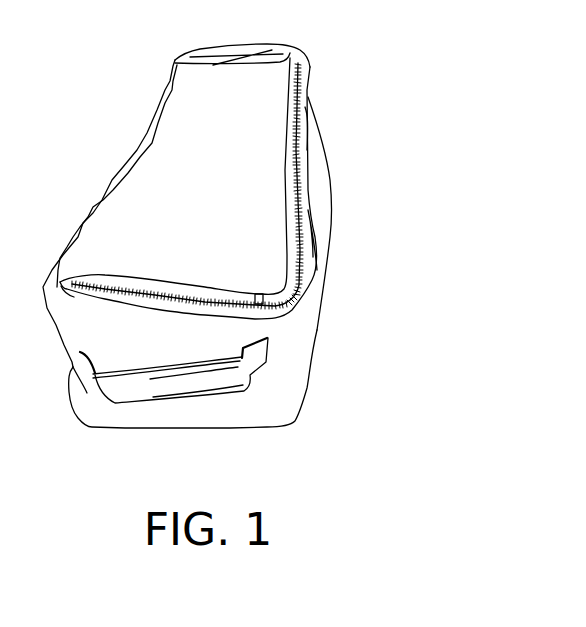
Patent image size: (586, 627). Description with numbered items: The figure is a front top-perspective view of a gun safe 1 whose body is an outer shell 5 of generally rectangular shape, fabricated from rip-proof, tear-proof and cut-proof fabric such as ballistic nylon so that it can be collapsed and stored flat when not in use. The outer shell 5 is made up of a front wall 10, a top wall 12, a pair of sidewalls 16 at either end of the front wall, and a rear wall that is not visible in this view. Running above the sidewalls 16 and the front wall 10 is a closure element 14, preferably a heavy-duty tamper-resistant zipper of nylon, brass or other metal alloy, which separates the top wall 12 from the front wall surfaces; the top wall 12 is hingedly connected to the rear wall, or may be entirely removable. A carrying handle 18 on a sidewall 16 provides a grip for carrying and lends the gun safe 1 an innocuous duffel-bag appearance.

The gun safe 1 is at (395, 240).
The outer shell 5 is at (194, 184).
The front wall 10 is at (317, 190).
The top wall 12 is at (243, 90).
The closure element 14 is at (305, 98).
The sidewalls 16 is at (270, 392).
The carrying handle 18 is at (127, 383).